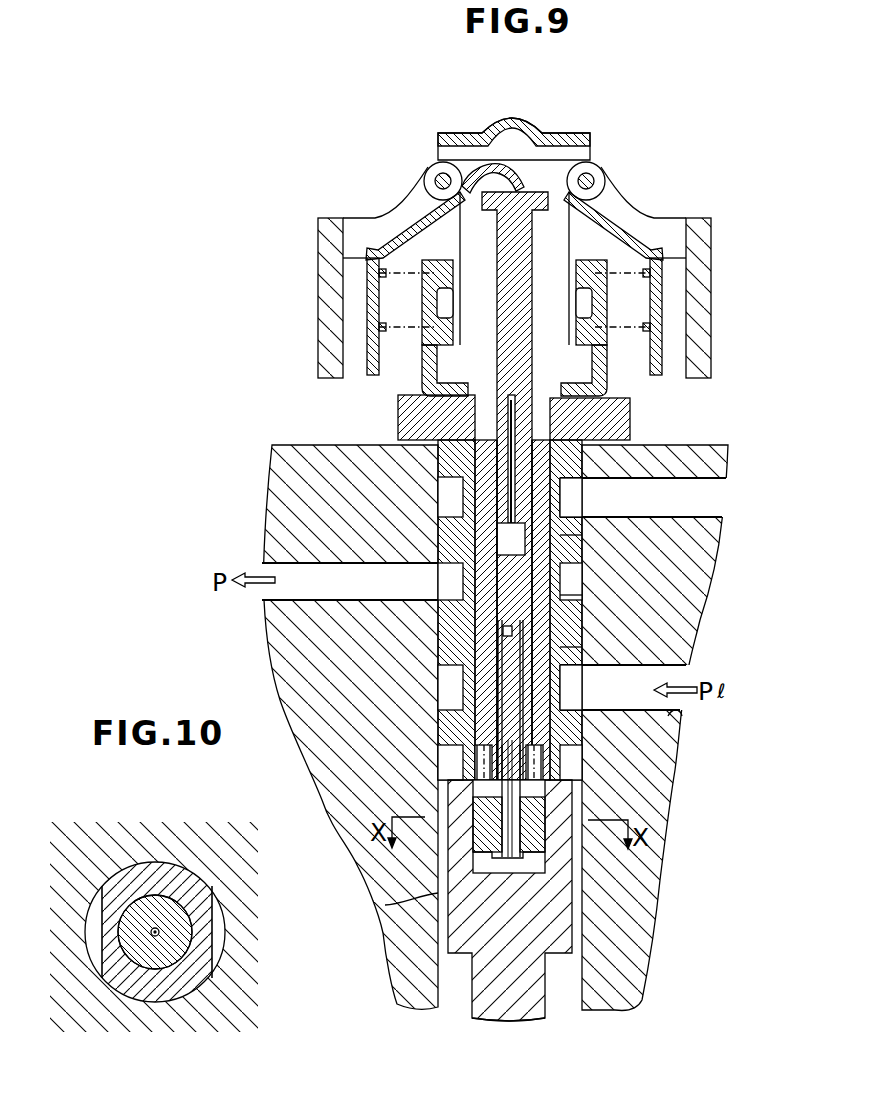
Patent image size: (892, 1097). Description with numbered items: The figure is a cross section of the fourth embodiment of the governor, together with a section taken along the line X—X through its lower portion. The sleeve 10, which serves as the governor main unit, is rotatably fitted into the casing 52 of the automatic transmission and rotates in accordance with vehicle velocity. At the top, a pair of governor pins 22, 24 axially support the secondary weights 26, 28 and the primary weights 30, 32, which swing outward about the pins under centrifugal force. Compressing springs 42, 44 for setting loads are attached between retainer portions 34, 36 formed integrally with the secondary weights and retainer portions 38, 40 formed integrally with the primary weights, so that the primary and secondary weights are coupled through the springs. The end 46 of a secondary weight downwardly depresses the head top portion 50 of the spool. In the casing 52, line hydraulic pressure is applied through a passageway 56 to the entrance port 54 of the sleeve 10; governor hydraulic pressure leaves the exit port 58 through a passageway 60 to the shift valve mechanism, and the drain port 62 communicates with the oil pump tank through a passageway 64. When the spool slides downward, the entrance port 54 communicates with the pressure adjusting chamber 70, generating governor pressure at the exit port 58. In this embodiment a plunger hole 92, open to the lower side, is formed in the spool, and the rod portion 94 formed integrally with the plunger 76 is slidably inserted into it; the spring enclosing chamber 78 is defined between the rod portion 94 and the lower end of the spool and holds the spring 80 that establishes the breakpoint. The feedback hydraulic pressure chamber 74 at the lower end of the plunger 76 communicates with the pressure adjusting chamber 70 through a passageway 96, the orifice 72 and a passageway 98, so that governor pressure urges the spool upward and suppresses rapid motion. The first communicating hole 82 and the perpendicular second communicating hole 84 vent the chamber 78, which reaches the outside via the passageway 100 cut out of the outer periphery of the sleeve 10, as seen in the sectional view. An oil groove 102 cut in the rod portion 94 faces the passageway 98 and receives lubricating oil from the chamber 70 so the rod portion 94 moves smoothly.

In FIG. 9, the sleeve 10 is at (550, 1008).
In FIG. 10, the sleeve 10 is at (132, 873).
In FIG. 9, the governor pin 22 is at (437, 168).
In FIG. 9, the governor pin 24 is at (600, 178).
In FIG. 9, the secondary weight 26 is at (410, 217).
In FIG. 9, the secondary weight 28 is at (623, 227).
In FIG. 9, the primary weight 30 is at (318, 308).
In FIG. 9, the primary weight 32 is at (711, 307).
In FIG. 9, the retainer portion 34 is at (420, 296).
In FIG. 9, the retainer portion 36 is at (620, 292).
In FIG. 9, the retainer portion 38 is at (417, 300).
In FIG. 9, the retainer portion 40 is at (612, 307).
In FIG. 9, the compressing spring 42 is at (368, 350).
In FIG. 9, the compressing spring 44 is at (662, 350).
In FIG. 9, the end of secondary weight 46 is at (486, 170).
In FIG. 9, the head top portion 50 is at (484, 194).
In FIG. 9, the casing 52 is at (345, 818).
In FIG. 9, the entrance port 54 is at (590, 690).
In FIG. 9, the passageway 56 is at (680, 715).
In FIG. 9, the exit port 58 is at (440, 583).
In FIG. 9, the passageway 60 is at (274, 598).
In FIG. 9, the drain port 62 is at (590, 498).
In FIG. 9, the passageway 64 is at (700, 500).
In FIG. 9, the pressure adjusting chamber 70 is at (562, 657).
In FIG. 9, the orifice 72 is at (465, 640).
In FIG. 9, the feedback hydraulic pressure chamber 74 is at (545, 862).
In FIG. 10, the plunger 76 is at (160, 903).
In FIG. 9, the spring enclosing chamber 78 is at (545, 748).
In FIG. 9, the spring 80 is at (545, 792).
In FIG. 9, the first communicating hole 82 is at (480, 452).
In FIG. 9, the second communicating hole 84 is at (527, 540).
In FIG. 9, the plunger hole 92 is at (565, 538).
In FIG. 9, the rod portion 94 is at (565, 598).
In FIG. 9, the passageway 96 is at (440, 723).
In FIG. 10, the passageway 96 is at (163, 930).
In FIG. 9, the passageway 98 is at (478, 625).
In FIG. 9, the passageway 100 is at (390, 905).
In FIG. 10, the passageway 100 is at (217, 948).
In FIG. 9, the oil groove 102 is at (563, 647).